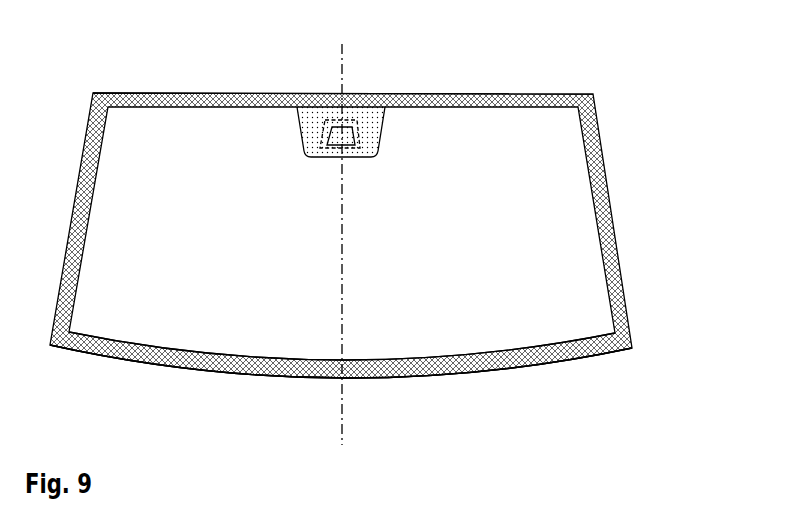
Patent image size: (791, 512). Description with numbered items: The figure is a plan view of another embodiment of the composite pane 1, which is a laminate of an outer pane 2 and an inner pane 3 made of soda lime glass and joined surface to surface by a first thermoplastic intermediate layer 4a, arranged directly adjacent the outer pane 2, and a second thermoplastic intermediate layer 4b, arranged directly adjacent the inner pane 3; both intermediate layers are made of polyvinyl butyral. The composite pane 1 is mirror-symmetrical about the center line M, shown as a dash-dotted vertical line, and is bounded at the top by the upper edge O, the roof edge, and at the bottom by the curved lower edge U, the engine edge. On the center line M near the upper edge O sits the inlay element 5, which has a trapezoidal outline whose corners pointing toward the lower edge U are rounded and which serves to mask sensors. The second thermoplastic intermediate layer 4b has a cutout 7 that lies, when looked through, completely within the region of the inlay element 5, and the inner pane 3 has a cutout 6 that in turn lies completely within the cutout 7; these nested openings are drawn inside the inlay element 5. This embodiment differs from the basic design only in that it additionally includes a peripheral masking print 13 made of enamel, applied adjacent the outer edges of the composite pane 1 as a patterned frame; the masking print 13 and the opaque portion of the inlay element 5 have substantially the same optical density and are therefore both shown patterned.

The composite pane 1 is at (394, 230).
The outer pane 2 is at (404, 235).
The inner pane 3 is at (404, 235).
The first thermoplastic intermediate layer 4a is at (404, 235).
The second thermoplastic intermediate layer 4b is at (572, 180).
The inlay element 5 is at (370, 123).
The cutout 6 is at (293, 94).
The cutout 7 is at (322, 148).
The masking print 13 is at (482, 370).
The upper edge O is at (150, 85).
The lower edge U is at (125, 380).
The center line M is at (343, 230).